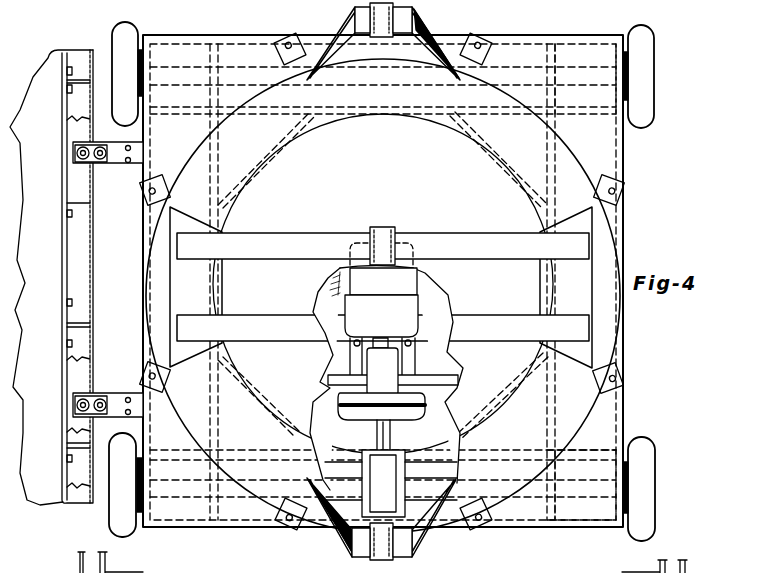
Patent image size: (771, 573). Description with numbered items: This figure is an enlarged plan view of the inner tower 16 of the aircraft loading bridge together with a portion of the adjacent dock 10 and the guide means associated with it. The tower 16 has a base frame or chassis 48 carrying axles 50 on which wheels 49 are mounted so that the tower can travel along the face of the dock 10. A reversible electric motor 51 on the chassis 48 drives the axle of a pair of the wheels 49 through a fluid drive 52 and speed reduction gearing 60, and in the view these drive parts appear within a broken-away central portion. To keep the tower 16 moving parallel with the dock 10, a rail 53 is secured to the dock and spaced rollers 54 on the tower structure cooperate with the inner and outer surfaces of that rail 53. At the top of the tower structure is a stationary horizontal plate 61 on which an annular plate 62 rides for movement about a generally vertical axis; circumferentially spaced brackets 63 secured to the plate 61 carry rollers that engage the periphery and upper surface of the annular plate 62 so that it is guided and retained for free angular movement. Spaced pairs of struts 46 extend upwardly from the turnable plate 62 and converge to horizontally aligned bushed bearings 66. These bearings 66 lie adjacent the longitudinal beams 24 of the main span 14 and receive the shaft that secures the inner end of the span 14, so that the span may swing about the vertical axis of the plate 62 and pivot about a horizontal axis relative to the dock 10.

The dock 10 is at (50, 297).
The main span 14 is at (686, 563).
The tower 16 is at (623, 227).
The longitudinal beams 24 is at (105, 557).
The struts 46 is at (423, 26).
The chassis 48 is at (617, 147).
The wheels 49 is at (637, 507).
The axles 50 is at (583, 73).
The electric motor 51 is at (412, 311).
The fluid drive 52 is at (405, 416).
The rail 53 is at (94, 300).
The rollers 54 is at (102, 400).
The speed reduction gearing 60 is at (391, 380).
The horizontal plate 61 is at (598, 434).
The annular plate 62 is at (508, 152).
The brackets 63 is at (620, 196).
The bushed bearings 66 is at (383, 23).